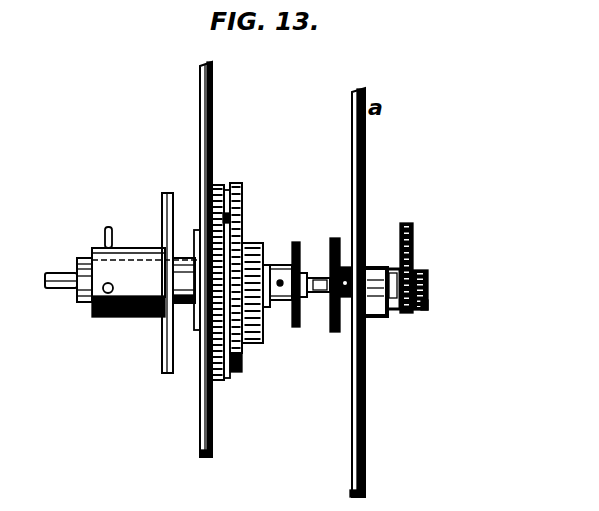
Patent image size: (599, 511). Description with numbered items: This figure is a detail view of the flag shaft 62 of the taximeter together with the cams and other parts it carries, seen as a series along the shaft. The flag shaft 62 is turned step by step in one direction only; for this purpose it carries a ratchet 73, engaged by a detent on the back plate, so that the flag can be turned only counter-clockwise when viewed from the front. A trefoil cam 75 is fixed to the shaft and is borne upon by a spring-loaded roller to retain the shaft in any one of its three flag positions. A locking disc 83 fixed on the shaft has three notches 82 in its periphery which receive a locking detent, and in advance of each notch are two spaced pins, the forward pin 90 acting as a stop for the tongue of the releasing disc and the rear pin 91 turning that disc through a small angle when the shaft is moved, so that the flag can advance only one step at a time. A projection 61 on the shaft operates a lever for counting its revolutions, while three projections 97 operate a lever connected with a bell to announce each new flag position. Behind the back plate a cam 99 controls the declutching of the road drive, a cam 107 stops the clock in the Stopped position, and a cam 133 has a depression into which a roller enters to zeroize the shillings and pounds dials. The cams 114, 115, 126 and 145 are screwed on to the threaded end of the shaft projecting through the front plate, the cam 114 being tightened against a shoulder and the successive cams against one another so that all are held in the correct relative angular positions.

The projection 61 is at (155, 318).
The projections 97 is at (107, 284).
The cam 99 is at (164, 364).
The ratchet 73 is at (222, 380).
The forward pin 90 is at (227, 236).
The rear pin 91 is at (230, 220).
The locking disc 83 is at (243, 189).
The trefoil cam 75 is at (243, 356).
The notches 82 is at (263, 326).
The cam 107 is at (296, 243).
The flag shaft 62 is at (317, 297).
The cam 133 is at (336, 333).
The cam 114 is at (375, 318).
The cam 115 is at (396, 311).
The cam 126 is at (413, 235).
The cam 145 is at (423, 306).